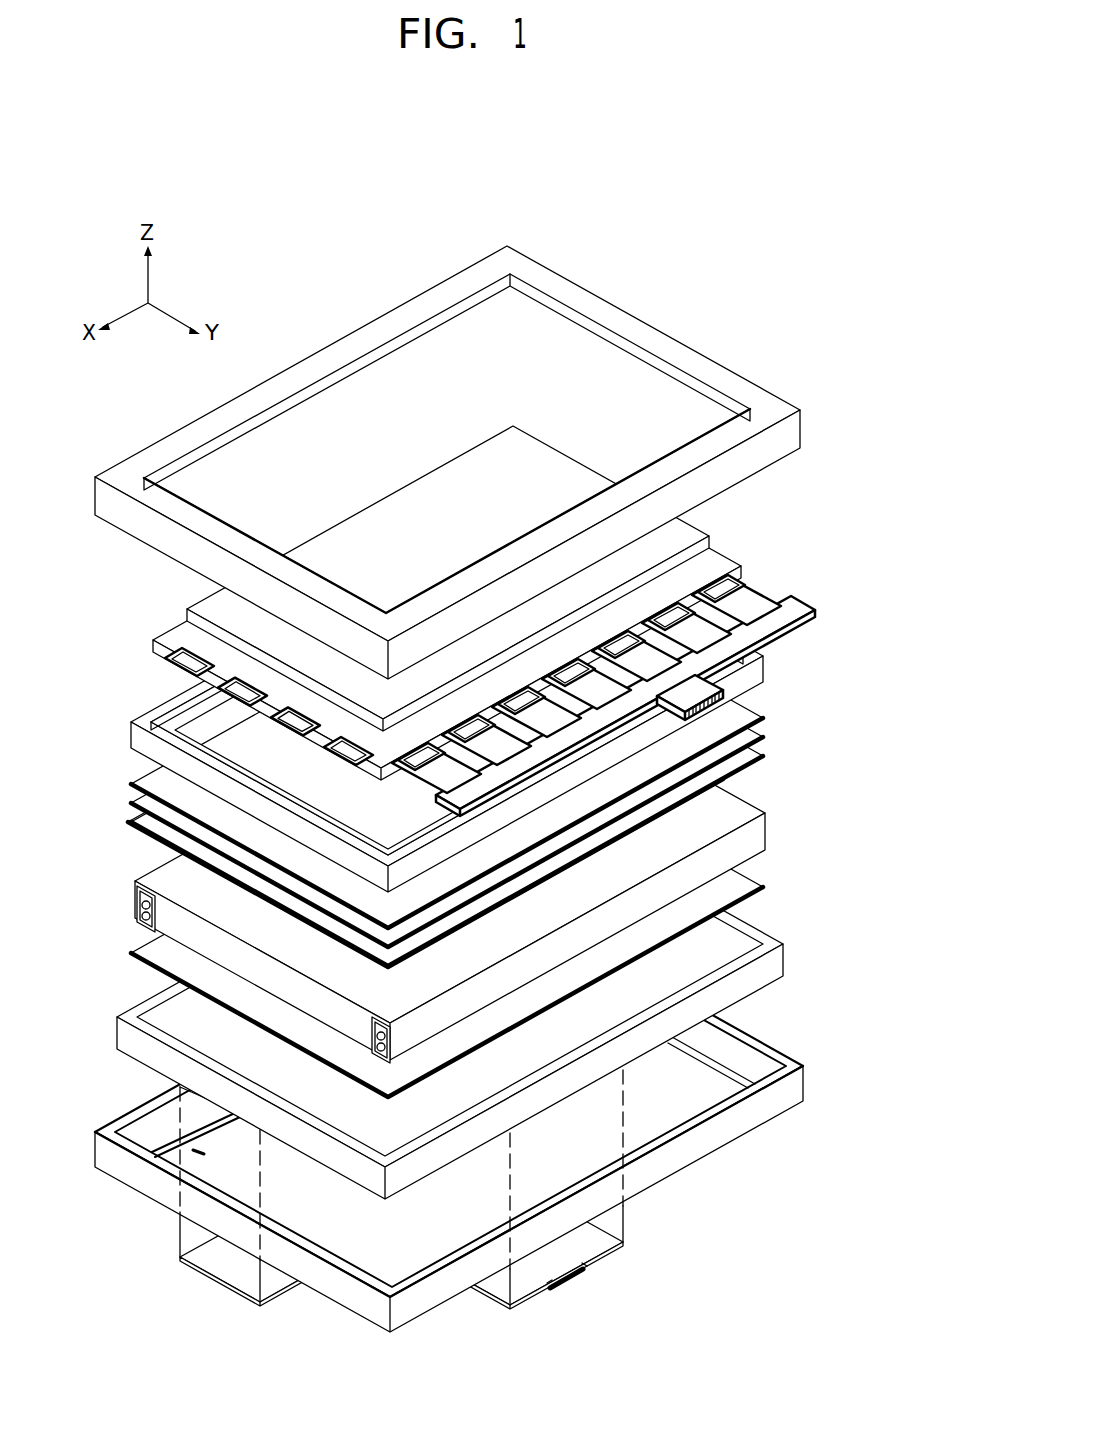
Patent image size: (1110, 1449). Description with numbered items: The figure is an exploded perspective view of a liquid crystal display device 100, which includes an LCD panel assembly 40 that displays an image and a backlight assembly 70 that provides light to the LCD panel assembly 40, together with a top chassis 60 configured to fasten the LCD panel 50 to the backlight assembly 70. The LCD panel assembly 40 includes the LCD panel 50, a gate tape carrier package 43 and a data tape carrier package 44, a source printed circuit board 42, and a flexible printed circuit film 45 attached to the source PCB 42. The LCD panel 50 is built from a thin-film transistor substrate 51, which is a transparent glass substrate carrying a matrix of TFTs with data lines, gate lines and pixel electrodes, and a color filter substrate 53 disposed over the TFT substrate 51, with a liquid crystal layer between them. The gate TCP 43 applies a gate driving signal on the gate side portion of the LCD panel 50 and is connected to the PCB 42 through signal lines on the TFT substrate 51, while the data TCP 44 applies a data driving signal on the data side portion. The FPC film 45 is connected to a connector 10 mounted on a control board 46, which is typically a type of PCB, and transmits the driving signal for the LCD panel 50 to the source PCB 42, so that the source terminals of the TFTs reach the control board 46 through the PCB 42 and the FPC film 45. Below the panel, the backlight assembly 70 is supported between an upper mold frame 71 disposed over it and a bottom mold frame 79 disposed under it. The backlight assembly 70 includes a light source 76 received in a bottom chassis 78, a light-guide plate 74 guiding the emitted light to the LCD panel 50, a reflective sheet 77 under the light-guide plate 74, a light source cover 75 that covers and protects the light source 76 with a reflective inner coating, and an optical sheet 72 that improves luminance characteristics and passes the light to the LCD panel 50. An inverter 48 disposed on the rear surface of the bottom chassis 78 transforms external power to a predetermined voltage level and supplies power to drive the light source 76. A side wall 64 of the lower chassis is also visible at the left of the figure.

The liquid crystal display device 100 is at (418, 214).
The top chassis 60 is at (702, 353).
The LCD panel 50 is at (398, 471).
The color filter substrate 53 is at (693, 533).
The thin-film transistor substrate 51 is at (716, 558).
The LCD panel assembly 40 is at (161, 609).
The source printed circuit board 42 is at (788, 622).
The gate tape carrier package 43 is at (166, 657).
The data tape carrier package 44 is at (754, 592).
The flexible printed circuit film 45 is at (731, 688).
The upper mold frame 71 is at (840, 890).
The optical sheet 72 is at (772, 713).
The light-guide plate 74 is at (726, 783).
The light source cover 75 is at (766, 826).
The light source 76 is at (371, 1031).
The reflective sheet 77 is at (752, 882).
The bottom chassis 78 is at (444, 996).
The bottom mold frame 79 is at (752, 1038).
The backlight assembly 70 is at (508, 804).
The side wall 64 is at (113, 1022).
The inverter 48 is at (233, 1272).
The control board 46 is at (497, 1290).
The connector 10 is at (566, 1284).